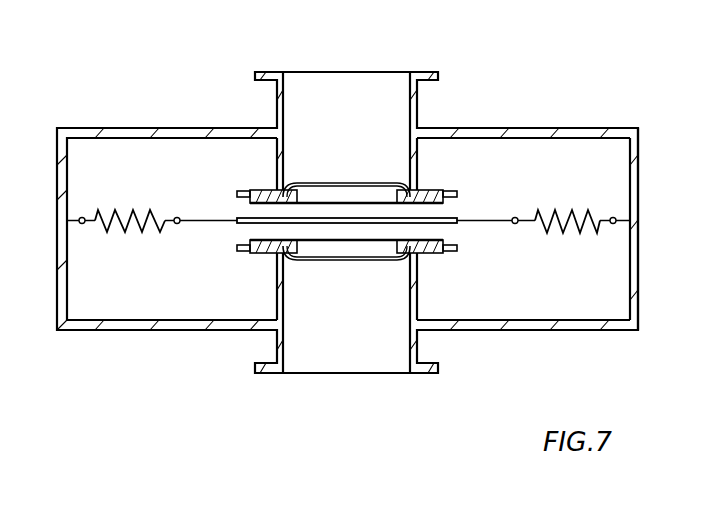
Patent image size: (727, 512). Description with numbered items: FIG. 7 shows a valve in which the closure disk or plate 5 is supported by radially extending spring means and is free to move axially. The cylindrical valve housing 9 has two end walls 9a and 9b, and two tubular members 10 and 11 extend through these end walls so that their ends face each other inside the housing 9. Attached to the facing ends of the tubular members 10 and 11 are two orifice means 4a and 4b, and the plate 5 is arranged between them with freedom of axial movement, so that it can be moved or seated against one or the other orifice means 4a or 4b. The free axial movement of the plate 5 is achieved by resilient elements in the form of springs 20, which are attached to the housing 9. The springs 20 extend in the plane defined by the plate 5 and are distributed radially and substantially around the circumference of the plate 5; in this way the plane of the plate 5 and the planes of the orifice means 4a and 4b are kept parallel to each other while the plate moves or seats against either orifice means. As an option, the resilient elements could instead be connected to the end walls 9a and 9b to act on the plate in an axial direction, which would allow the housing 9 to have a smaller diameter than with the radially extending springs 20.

The orifice means 4a is at (440, 193).
The orifice means 4b is at (432, 253).
The plate 5 is at (255, 216).
The valve housing 9 is at (638, 280).
The end wall 9a is at (490, 128).
The end wall 9b is at (535, 330).
The tubular member 10 is at (417, 171).
The tubular member 11 is at (417, 306).
The springs 20 is at (137, 210).